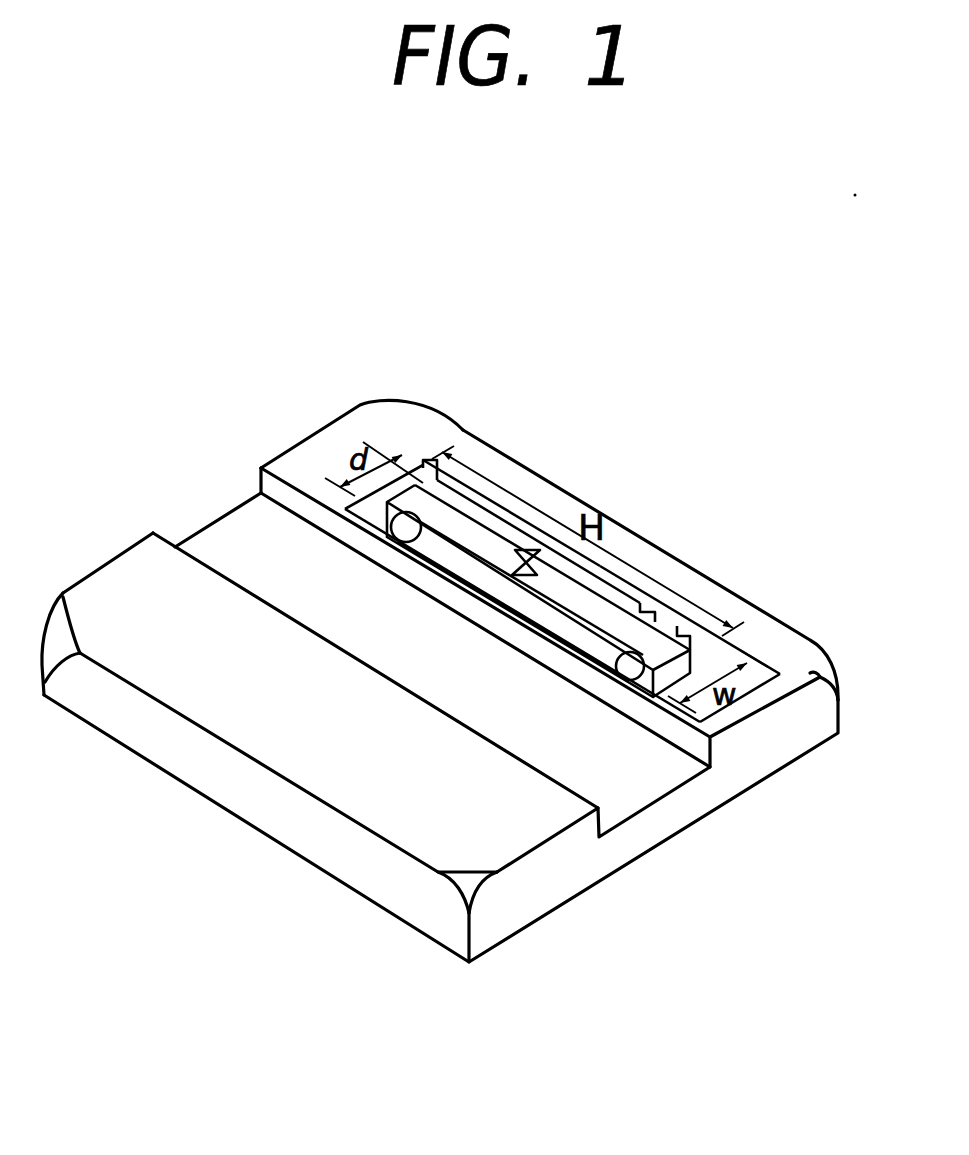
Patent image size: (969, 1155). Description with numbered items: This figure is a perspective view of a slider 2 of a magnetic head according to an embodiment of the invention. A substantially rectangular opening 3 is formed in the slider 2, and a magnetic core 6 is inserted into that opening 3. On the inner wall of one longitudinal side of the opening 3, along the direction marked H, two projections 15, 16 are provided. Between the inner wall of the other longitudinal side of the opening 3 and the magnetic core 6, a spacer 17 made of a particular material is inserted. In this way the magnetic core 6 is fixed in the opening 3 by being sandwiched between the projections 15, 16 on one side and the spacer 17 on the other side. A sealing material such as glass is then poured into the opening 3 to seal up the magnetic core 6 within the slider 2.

The slider 2 is at (358, 405).
The opening 3 is at (640, 584).
The magnetic core 6 is at (472, 522).
The projection 15 is at (453, 444).
The projection 16 is at (668, 633).
The spacer 17 is at (588, 645).